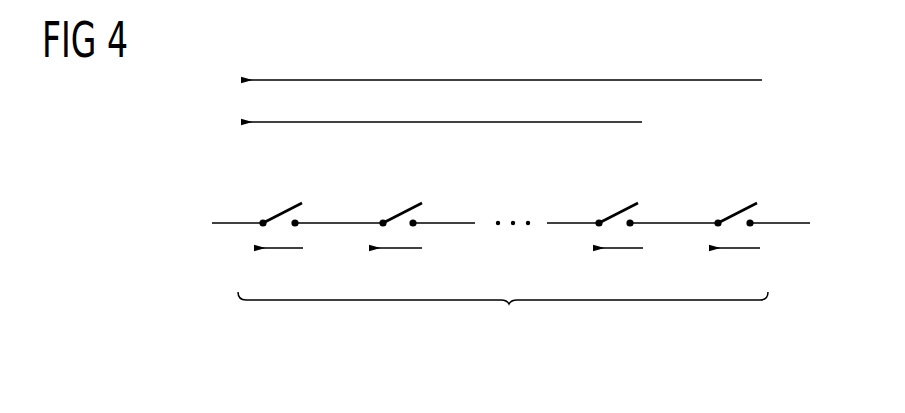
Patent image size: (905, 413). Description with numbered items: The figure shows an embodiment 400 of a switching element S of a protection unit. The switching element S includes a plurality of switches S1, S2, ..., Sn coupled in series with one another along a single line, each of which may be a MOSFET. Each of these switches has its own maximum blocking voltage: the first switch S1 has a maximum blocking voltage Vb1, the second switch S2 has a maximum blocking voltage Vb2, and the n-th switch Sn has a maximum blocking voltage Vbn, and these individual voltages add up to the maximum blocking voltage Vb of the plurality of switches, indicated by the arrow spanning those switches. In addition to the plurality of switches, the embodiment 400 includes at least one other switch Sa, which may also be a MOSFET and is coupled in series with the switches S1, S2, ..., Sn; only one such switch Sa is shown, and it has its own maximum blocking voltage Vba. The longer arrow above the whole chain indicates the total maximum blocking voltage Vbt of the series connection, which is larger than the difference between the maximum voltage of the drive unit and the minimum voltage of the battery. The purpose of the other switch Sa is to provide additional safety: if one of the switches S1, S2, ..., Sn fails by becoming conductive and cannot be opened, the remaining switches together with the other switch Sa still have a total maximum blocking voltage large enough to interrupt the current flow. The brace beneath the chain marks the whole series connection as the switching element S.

The embodiment of a switching element 400 is at (172, 168).
The switch S1 is at (282, 207).
The switch S2 is at (398, 207).
The switch Sn is at (617, 207).
The other switch Sa is at (737, 207).
The total maximum blocking voltage Vbt is at (501, 98).
The maximum blocking voltage of the switching element Vb is at (441, 140).
The maximum blocking voltage Vb1 is at (278, 267).
The maximum blocking voltage Vb2 is at (395, 267).
The maximum blocking voltage Vbn is at (618, 267).
The maximum blocking voltage of the other switch Vba is at (734, 267).
The switching element S is at (503, 316).